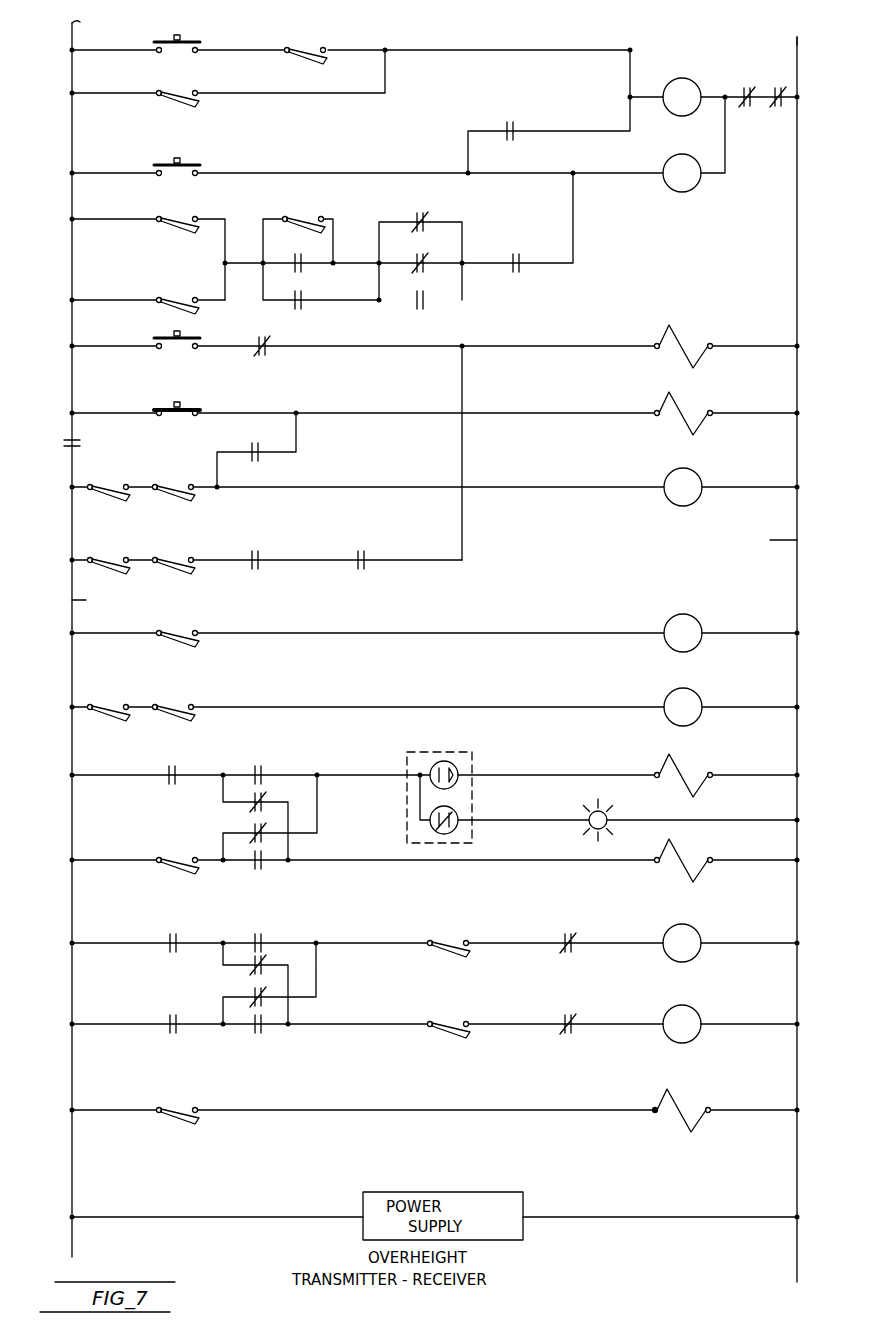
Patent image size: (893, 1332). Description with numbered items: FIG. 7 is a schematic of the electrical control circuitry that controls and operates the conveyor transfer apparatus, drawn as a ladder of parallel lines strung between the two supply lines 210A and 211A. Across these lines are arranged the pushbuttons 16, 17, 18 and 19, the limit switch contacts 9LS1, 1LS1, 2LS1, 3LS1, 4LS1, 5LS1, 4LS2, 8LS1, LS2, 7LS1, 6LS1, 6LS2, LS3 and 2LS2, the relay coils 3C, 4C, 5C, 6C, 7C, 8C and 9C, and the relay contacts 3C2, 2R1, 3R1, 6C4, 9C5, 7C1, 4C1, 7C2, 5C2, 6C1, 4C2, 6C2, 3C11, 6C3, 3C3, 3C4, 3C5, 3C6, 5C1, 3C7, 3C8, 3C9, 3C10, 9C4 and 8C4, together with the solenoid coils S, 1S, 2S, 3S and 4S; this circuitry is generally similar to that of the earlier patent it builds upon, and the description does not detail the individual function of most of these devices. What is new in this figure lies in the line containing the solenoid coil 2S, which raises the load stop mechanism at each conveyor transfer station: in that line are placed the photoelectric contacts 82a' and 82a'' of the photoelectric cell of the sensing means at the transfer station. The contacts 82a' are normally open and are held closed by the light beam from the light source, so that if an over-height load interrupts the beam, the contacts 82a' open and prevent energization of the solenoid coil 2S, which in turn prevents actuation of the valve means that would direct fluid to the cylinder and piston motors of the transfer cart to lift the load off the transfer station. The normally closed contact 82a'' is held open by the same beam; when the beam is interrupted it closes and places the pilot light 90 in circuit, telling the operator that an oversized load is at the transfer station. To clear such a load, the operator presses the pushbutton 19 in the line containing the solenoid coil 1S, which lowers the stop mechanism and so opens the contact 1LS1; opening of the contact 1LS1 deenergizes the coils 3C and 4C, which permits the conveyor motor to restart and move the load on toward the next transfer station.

The power supply line 210A is at (106, 311).
The power supply line 211A is at (790, 46).
The push button switch 16 is at (190, 38).
The push button switch 17 is at (190, 164).
The push button switch 18 is at (178, 334).
The push button switch 19 is at (176, 402).
The limit switch contact 9LS1 is at (306, 44).
The contact 1LS1 is at (176, 88).
The limit switch contact 2LS1 is at (192, 202).
The limit switch contact 3LS1 is at (178, 283).
The limit switch contact 4LS1 is at (298, 202).
The limit switch contacts 5LS1 is at (110, 472).
The limit switch contact 4LS2 is at (110, 542).
The limit switch contact 8LS1 is at (178, 542).
The limit switch contact LS2 is at (174, 628).
The limit switch contacts 7LS1 is at (110, 690).
The limit switch contact 6LS1 is at (174, 854).
The limit switch contact 6LS2 is at (460, 920).
The limit switch contact LS3 is at (456, 1002).
The limit switch contact 2LS2 is at (166, 1104).
The coil 3C is at (678, 78).
The coil 4C is at (676, 196).
The relay coil 5C is at (701, 480).
The relay coil 6C is at (700, 624).
The relay coil 7C is at (701, 698).
The relay coil 8C is at (700, 934).
The relay coil 9C is at (700, 1016).
The relay contact 3C2 is at (515, 117).
The relay contact 2R1 is at (739, 90).
The relay contact 3R1 is at (772, 90).
The relay contact 6C4 is at (417, 212).
The relay contact 9C5 is at (290, 259).
The relay contact 7C1 is at (412, 256).
The relay contact 4C1 is at (514, 252).
The relay contact 7C2 is at (300, 310).
The relay contact 5C2 is at (422, 310).
The relay contact 6C1 is at (266, 354).
The relay contact 4C2 is at (84, 436).
The relay contact 6C2 is at (258, 460).
The relay contact 3C11 is at (256, 554).
The relay contact 6C3 is at (185, 752).
The relay contact 3C3 is at (265, 766).
The relay contact 3C4 is at (265, 796).
The relay contact 3C5 is at (250, 828).
The relay contact 3C6 is at (262, 868).
The relay contact 5C1 is at (171, 932).
The relay contact 3C7 is at (264, 936).
The relay contact 3C8 is at (262, 962).
The relay contact 3C9 is at (250, 994).
The relay contact 3C10 is at (262, 1032).
The relay contact 9C4 is at (570, 934).
The relay contact 8C4 is at (570, 1016).
The solenoid S is at (682, 344).
The solenoid coil 1S is at (682, 412).
The solenoid coil 2S is at (684, 774).
The solenoid 3S is at (684, 860).
The solenoid 4S is at (684, 1106).
The photoelectric contacts 82a' is at (445, 779).
The photoelectric contact 82a'' is at (401, 831).
The pilot light 90 is at (588, 813).